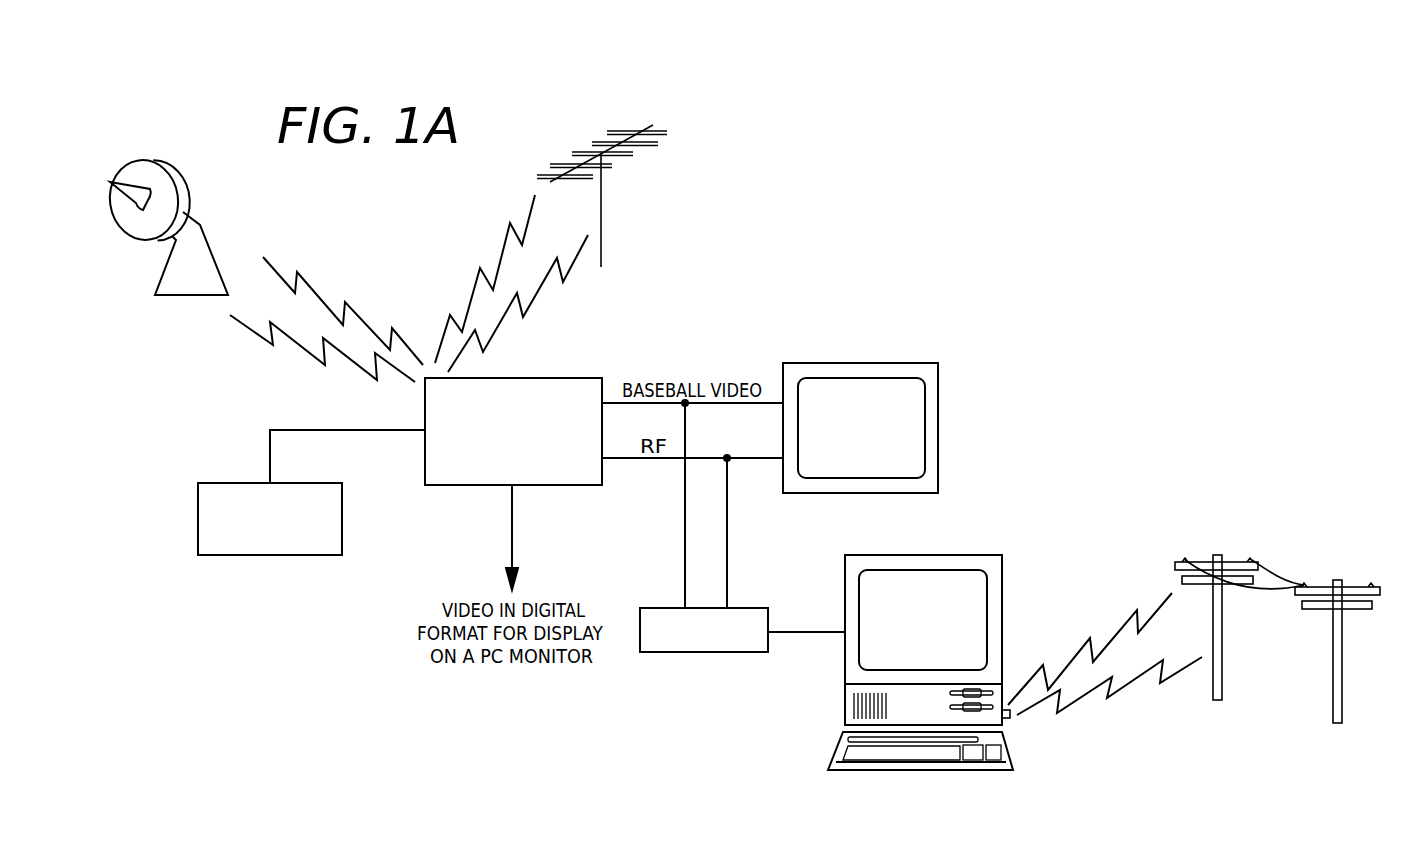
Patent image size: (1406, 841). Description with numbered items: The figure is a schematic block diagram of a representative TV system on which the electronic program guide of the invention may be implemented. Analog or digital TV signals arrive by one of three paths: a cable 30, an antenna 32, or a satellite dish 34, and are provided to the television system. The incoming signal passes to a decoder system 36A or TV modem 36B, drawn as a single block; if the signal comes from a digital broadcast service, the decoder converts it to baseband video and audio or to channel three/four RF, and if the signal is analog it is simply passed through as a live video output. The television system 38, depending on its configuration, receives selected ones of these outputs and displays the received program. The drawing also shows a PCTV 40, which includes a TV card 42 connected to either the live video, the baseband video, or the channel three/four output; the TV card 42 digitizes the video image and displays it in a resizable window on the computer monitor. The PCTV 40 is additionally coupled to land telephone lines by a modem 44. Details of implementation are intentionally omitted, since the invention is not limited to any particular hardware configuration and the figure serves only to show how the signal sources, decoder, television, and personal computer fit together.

The cable 30 is at (270, 456).
The antenna 32 is at (613, 156).
The satellite dish 34 is at (120, 233).
The decoder system 36A is at (513, 431).
The TV modem 36B is at (513, 431).
The television system 38 is at (940, 397).
The personal computer 40 is at (1020, 552).
The TV card 42 is at (727, 652).
The modem 44 is at (1010, 716).